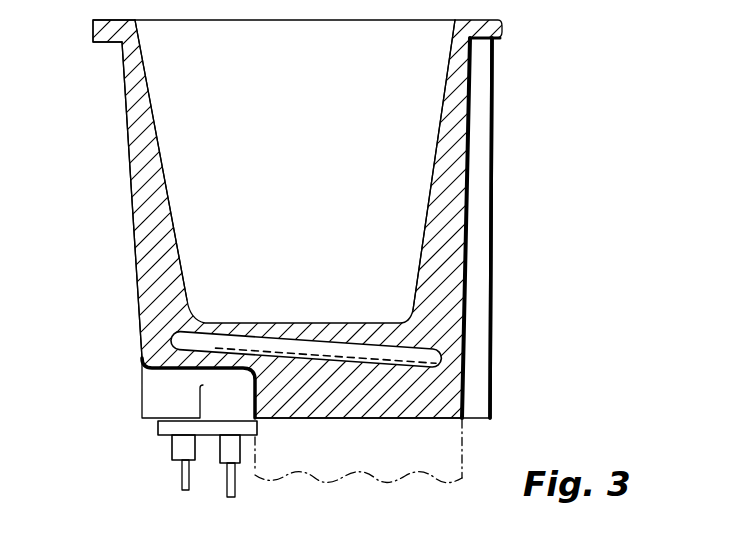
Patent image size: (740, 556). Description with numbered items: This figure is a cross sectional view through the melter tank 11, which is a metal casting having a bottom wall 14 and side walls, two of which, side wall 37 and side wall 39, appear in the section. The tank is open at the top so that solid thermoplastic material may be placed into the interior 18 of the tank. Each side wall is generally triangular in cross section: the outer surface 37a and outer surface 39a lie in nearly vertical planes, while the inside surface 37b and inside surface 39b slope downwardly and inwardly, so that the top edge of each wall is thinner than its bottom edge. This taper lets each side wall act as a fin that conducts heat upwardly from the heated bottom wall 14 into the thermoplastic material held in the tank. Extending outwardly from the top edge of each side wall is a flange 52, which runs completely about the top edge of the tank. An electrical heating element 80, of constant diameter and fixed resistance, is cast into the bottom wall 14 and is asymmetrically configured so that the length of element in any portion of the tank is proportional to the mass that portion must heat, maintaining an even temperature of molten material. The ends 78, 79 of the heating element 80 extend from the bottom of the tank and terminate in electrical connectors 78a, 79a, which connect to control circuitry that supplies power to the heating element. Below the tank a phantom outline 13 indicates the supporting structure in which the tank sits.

The melter tank 11 is at (92, 305).
The base housing (phantom) 13 is at (465, 456).
The bottom wall 14 is at (293, 322).
The interior cavity 18 is at (336, 184).
The side wall 37 is at (147, 205).
The outer surface 37a is at (131, 192).
The inside surface 37b is at (166, 172).
The side wall 39 is at (447, 220).
The outer surface 39a is at (468, 173).
The inside surface 39b is at (432, 163).
The flange 52 is at (93, 26).
The end of heating element 78 is at (227, 462).
The electrical connector 78a is at (238, 478).
The end of heating element 79 is at (182, 450).
The electrical connector 79a is at (186, 478).
The heating element 80 is at (323, 348).